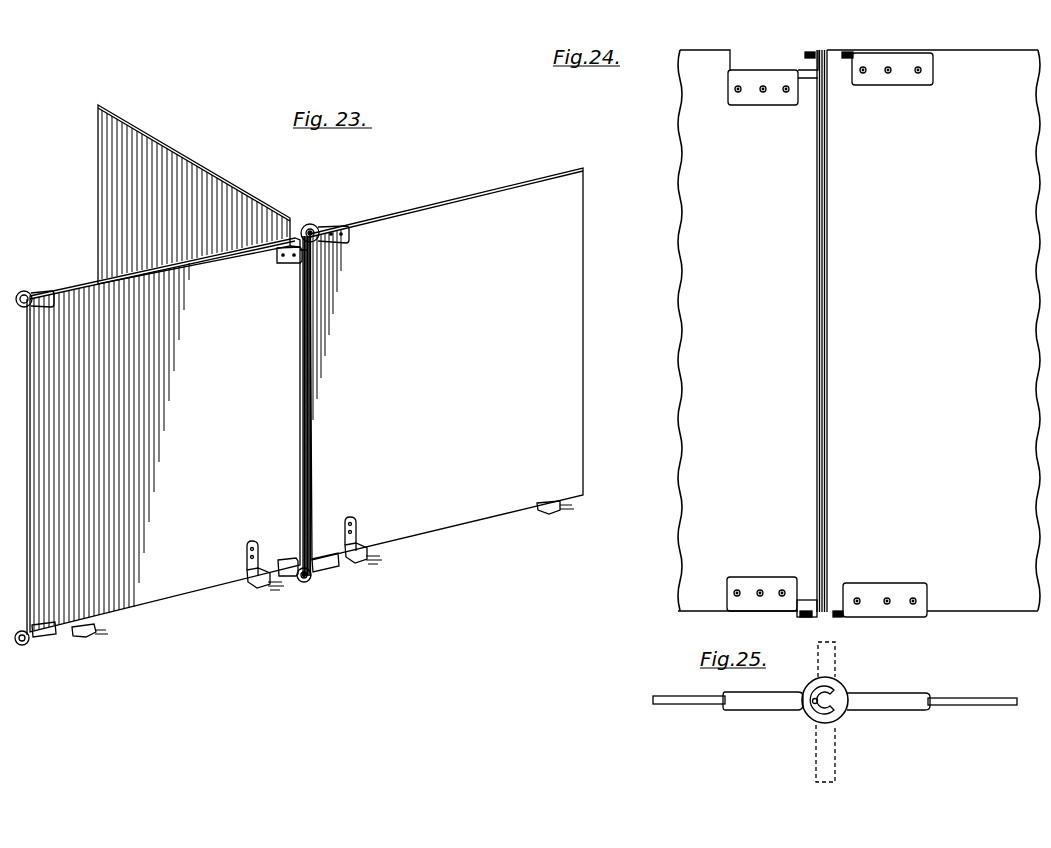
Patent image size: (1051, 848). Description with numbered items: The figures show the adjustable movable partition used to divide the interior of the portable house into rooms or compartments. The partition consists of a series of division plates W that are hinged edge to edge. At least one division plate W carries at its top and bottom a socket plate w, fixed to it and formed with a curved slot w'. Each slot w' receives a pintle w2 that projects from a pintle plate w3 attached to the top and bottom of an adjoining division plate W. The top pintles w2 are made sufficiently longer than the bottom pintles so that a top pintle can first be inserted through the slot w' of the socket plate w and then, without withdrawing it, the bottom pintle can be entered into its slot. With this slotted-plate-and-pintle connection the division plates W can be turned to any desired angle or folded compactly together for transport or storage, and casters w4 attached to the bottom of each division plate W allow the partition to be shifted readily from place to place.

In FIG. 23, the division plate W is at (305, 370).
In FIG. 24, the division plate W is at (859, 331).
In FIG. 25, the division plate W is at (684, 706).
In FIG. 23, the socket plate w is at (182, 429).
In FIG. 24, the socket plate w is at (888, 323).
In FIG. 25, the socket plate w is at (863, 711).
In FIG. 23, the curved slot w' is at (320, 419).
In FIG. 25, the curved slot w' is at (803, 714).
In FIG. 24, the pintle w2 is at (822, 49).
In FIG. 25, the pintle w2 is at (806, 689).
In FIG. 23, the pintle plate w3 is at (292, 264).
In FIG. 24, the pintle plate w3 is at (762, 104).
In FIG. 25, the pintle plate w3 is at (742, 711).
In FIG. 23, the caster w4 is at (260, 560).